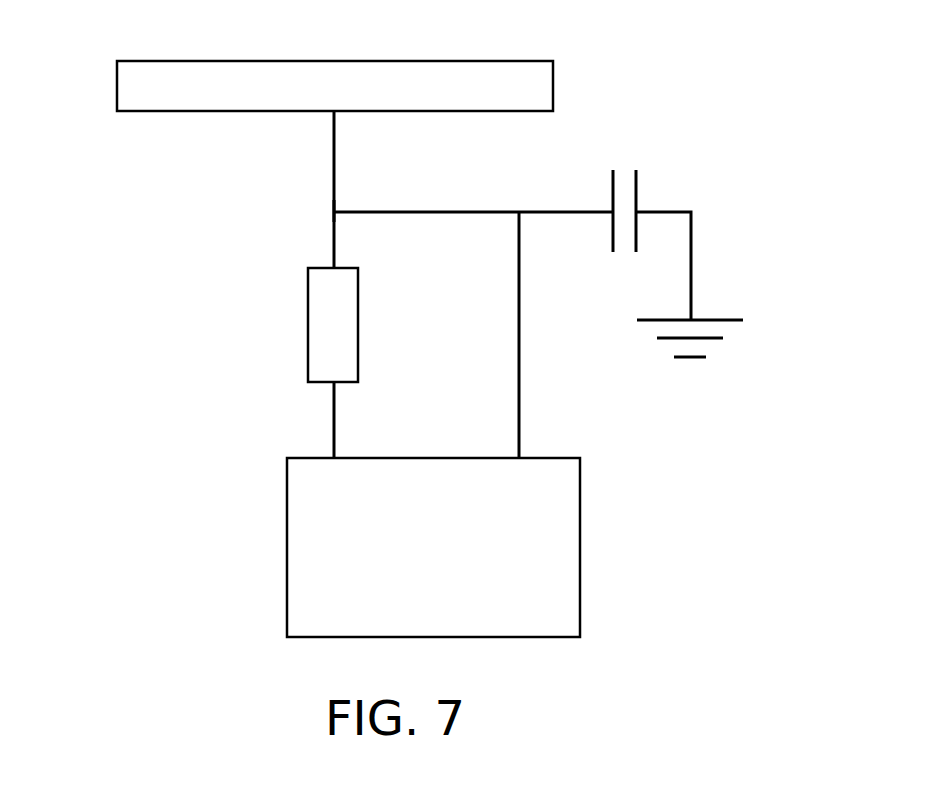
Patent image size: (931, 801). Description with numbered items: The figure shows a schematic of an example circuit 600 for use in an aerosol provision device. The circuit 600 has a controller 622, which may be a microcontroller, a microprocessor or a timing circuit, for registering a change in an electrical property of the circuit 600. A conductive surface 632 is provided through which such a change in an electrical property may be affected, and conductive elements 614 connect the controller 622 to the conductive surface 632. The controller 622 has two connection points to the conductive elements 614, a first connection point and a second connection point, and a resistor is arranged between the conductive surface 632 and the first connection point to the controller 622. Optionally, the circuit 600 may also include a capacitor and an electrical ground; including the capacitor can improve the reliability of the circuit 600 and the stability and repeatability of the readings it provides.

The circuit 600 is at (703, 57).
The conductive surface 632 is at (116, 83).
The conductive elements 614 is at (333, 192).
The controller 622 is at (286, 554).